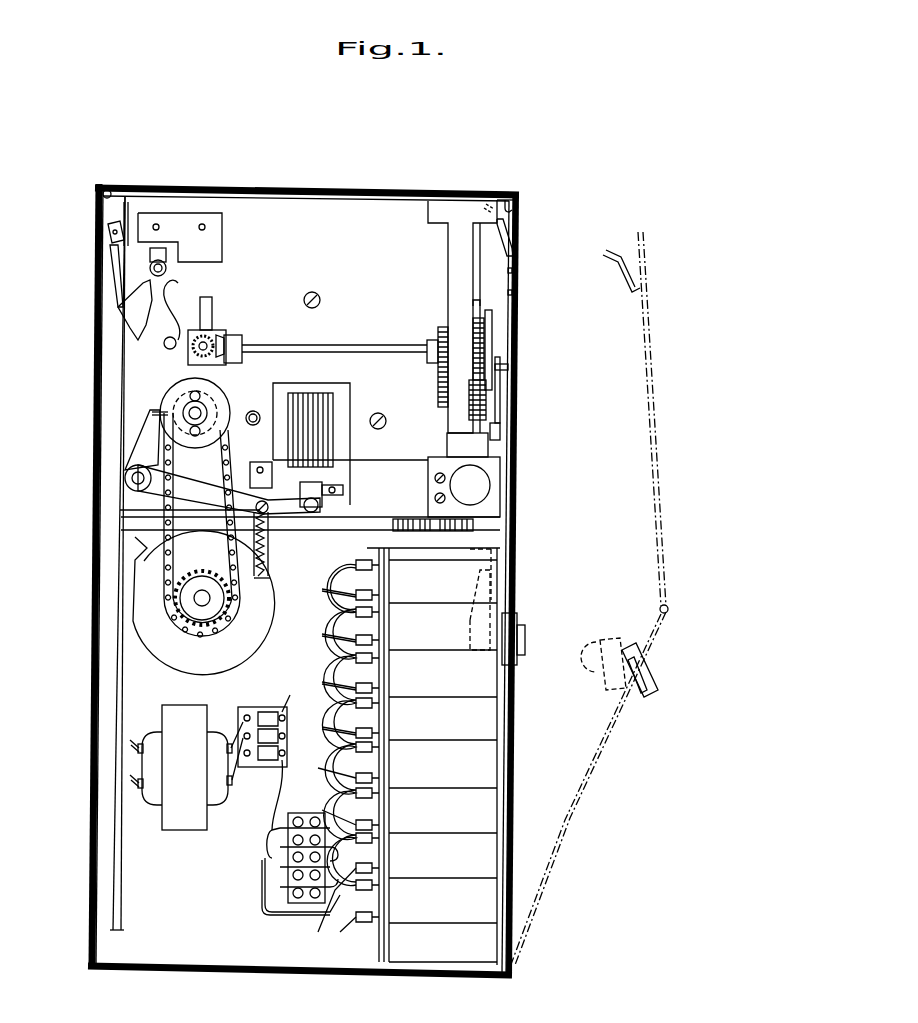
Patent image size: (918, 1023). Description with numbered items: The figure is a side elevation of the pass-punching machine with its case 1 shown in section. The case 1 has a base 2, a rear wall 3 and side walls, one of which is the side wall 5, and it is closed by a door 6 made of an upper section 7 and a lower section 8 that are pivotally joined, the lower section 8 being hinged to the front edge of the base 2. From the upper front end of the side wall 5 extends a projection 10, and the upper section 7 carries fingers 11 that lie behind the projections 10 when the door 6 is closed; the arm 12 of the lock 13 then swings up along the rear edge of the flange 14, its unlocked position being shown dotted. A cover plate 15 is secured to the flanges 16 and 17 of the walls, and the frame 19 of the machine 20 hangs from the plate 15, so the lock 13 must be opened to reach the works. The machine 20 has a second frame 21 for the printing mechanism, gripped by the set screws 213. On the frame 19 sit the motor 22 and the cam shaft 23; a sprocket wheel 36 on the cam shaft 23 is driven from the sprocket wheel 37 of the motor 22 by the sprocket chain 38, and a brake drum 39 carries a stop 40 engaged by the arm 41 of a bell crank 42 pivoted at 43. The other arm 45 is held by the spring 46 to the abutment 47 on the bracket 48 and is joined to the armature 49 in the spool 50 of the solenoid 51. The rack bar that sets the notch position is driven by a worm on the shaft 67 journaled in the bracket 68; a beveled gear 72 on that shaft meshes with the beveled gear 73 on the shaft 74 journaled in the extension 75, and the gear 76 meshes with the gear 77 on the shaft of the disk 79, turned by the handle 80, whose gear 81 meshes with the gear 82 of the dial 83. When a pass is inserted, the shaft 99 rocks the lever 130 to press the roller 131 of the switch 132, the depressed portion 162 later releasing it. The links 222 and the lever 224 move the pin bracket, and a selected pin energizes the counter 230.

The case 1 is at (90, 617).
The base 2 is at (206, 969).
The rear wall 3 is at (92, 795).
The side wall 5 is at (105, 870).
The door 6 is at (521, 270).
The upper door section 7 is at (652, 386).
The lower door section 8 is at (500, 741).
The projections 10 is at (512, 210).
The fingers 11 is at (507, 240).
The lock arm 12 is at (478, 590).
The lock 13 is at (526, 641).
The flange 14 is at (466, 569).
The cover plate 15 is at (325, 190).
The flange 16 is at (103, 197).
The flange 17 is at (514, 203).
The frame 19 is at (120, 383).
The machine 20 is at (307, 543).
The frame 21 is at (400, 216).
The motor 22 is at (250, 647).
The cam shaft 23 is at (201, 603).
The sprocket wheel 36 is at (218, 396).
The sprocket wheel 37 is at (200, 572).
The sprocket chain 38 is at (237, 605).
The brake drum 39 is at (223, 410).
The stop 40 is at (158, 411).
The arm 41 is at (155, 433).
The bell crank 42 is at (186, 486).
The pivot 43 is at (125, 479).
The arm 45 is at (152, 500).
The spring 46 is at (274, 543).
The abutment 47 is at (266, 578).
The bracket 48 is at (263, 540).
The armature 49 is at (323, 484).
The spool 50 is at (313, 400).
The solenoid 51 is at (346, 447).
The shaft 67 is at (198, 352).
The bracket 68 is at (208, 300).
The beveled gear 72 is at (210, 340).
The beveled gear 73 is at (221, 338).
The shaft 74 is at (347, 345).
The extension 75 is at (240, 342).
The gear 76 is at (440, 330).
The gear 77 is at (438, 400).
The disk 79 is at (500, 385).
The handle 80 is at (508, 367).
The gear 81 is at (471, 410).
The gear 82 is at (484, 328).
The dial 83 is at (492, 327).
The shaft 99 is at (175, 325).
The lever 130 is at (118, 307).
The roller 131 is at (168, 269).
The switch 132 is at (215, 226).
The depressed portion 162 is at (180, 283).
The set screws 213 is at (471, 482).
The links 222 is at (125, 222).
The lever 224 is at (112, 250).
The counter 230 is at (488, 727).